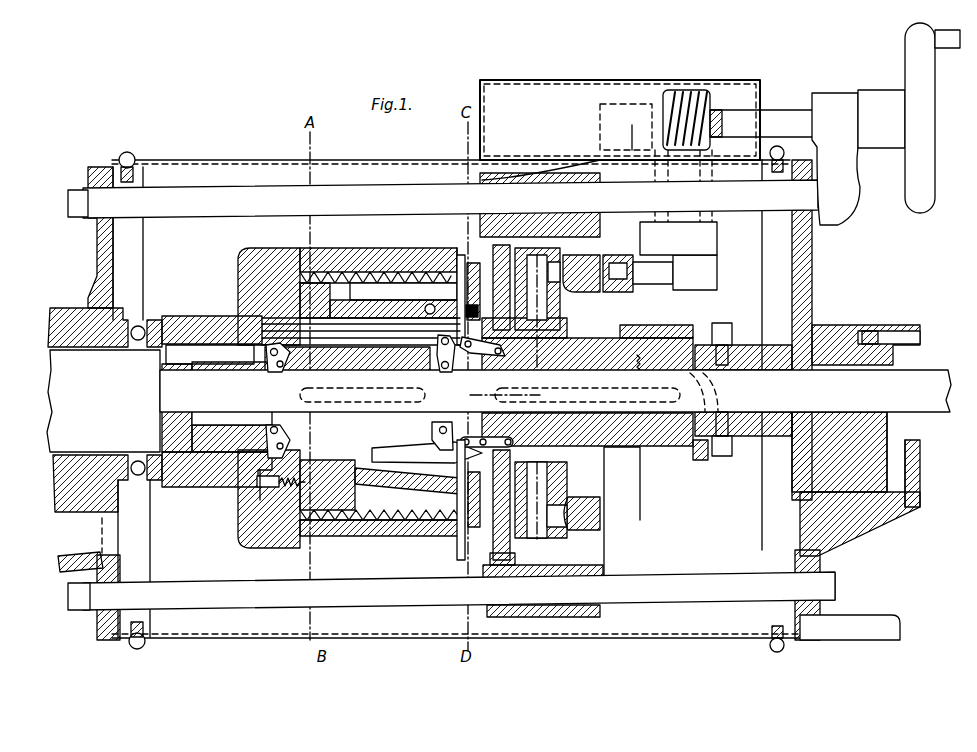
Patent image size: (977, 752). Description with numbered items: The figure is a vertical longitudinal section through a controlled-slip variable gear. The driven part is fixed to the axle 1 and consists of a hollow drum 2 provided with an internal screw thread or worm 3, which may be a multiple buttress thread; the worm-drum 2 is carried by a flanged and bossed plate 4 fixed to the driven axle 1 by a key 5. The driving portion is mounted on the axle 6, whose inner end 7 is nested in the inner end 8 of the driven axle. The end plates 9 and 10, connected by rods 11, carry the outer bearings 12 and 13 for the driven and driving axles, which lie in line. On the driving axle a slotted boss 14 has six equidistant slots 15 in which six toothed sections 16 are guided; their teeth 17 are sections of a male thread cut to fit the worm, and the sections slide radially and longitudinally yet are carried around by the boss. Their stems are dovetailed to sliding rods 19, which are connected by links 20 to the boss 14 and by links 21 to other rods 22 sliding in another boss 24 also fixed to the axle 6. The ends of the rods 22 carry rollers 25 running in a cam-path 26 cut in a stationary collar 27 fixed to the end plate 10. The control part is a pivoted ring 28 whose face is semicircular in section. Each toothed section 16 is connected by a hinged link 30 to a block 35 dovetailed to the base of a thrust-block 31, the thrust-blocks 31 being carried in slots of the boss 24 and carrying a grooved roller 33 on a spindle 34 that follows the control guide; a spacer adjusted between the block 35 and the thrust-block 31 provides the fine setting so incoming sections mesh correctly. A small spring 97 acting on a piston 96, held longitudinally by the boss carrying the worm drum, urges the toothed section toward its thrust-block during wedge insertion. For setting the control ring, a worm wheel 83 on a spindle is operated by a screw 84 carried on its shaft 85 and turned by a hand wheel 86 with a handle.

The axle 1 is at (103, 401).
The hollow drum 2 is at (396, 536).
The internal screw thread or worm 3 is at (410, 268).
The flanged and bossed plate 4 is at (200, 318).
The key 5 is at (210, 354).
The axle 6 is at (555, 391).
The inner end 7 is at (217, 407).
The inner end 8 is at (196, 470).
The end plate 9 is at (104, 250).
The end plate 10 is at (796, 300).
The rods 11 is at (410, 193).
The outer bearing 12 is at (81, 320).
The outer bearing 13 is at (851, 328).
The slotted boss 14 is at (312, 371).
The slots 15 is at (358, 354).
The toothed sections 16 is at (342, 280).
The teeth 17 is at (371, 500).
The sliding rods 19 is at (440, 452).
The links 20 is at (289, 366).
The links 21 is at (479, 358).
The rods 22 is at (637, 346).
The boss 24 is at (668, 430).
The rollers 25 is at (729, 345).
The cam-path 26 is at (713, 386).
The collar 27 is at (737, 448).
The ring 28 is at (605, 517).
The link 30 is at (406, 308).
The thrust-block 31 is at (540, 256).
The grooved roller 33 is at (582, 258).
The spindle 34 is at (586, 292).
The block 35 is at (449, 308).
The worm wheel 83 is at (727, 113).
The screw 84 is at (712, 108).
The worm shaft 85 is at (818, 159).
The hand wheel 86 is at (913, 178).
The piston 96 is at (257, 485).
The spring 97 is at (262, 500).